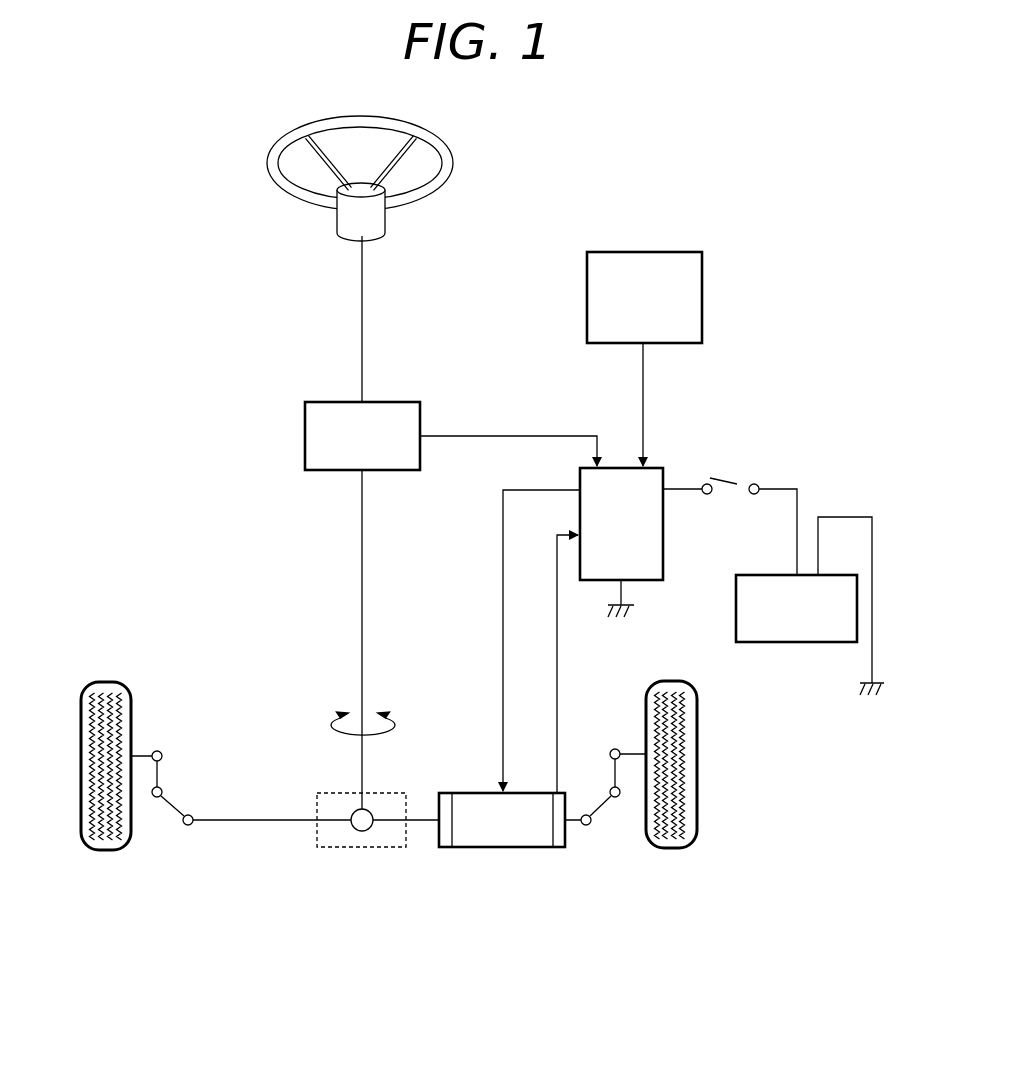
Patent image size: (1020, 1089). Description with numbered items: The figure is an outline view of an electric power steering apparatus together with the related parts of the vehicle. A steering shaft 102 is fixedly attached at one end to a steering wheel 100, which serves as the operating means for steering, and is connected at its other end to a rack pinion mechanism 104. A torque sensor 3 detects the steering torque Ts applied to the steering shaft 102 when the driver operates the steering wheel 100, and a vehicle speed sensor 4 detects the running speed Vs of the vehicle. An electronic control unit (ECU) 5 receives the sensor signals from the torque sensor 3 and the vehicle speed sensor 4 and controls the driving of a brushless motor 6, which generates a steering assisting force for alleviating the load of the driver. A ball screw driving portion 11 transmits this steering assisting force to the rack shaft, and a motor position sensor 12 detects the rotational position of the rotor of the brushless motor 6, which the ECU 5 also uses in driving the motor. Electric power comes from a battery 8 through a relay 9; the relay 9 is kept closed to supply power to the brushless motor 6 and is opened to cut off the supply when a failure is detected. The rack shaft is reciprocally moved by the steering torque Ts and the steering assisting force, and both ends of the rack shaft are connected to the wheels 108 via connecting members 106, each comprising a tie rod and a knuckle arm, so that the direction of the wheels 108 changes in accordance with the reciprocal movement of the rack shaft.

The steering wheel 100 is at (453, 164).
The steering shaft 102 is at (362, 290).
The torque sensor 3 is at (305, 424).
The vehicle speed sensor 4 is at (673, 252).
The electronic control unit (ECU) 5 is at (663, 545).
The relay 9 is at (731, 478).
The battery 8 is at (806, 642).
The brushless motor 6 is at (508, 848).
The ball screw driving portion 11 is at (445, 848).
The motor position sensor 12 is at (558, 848).
The rack pinion mechanism 104 is at (348, 848).
The connecting members 106 is at (181, 794).
The wheels 108 is at (103, 845).